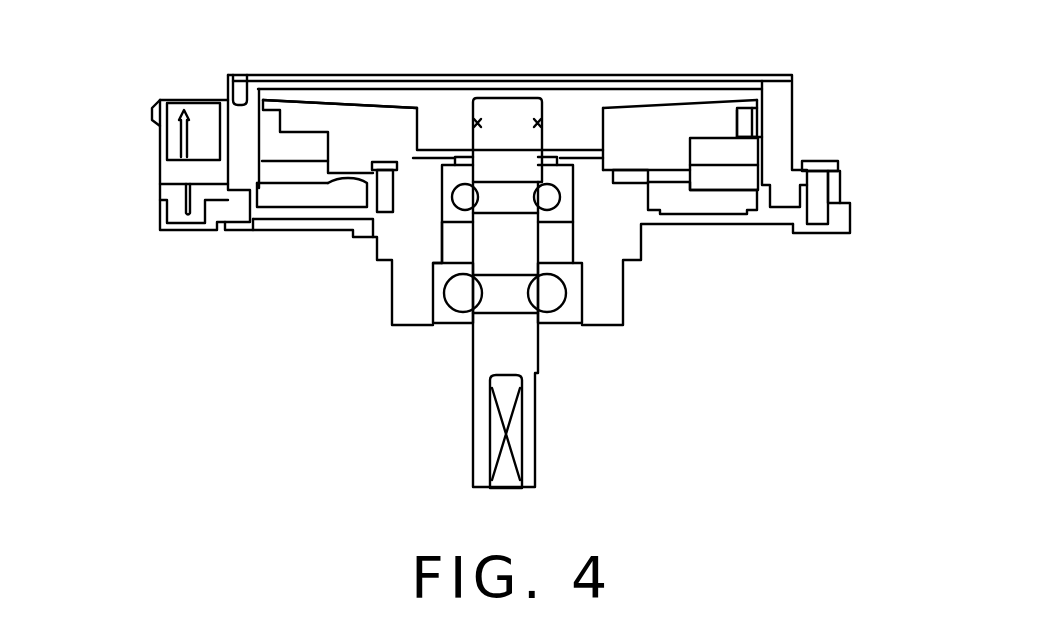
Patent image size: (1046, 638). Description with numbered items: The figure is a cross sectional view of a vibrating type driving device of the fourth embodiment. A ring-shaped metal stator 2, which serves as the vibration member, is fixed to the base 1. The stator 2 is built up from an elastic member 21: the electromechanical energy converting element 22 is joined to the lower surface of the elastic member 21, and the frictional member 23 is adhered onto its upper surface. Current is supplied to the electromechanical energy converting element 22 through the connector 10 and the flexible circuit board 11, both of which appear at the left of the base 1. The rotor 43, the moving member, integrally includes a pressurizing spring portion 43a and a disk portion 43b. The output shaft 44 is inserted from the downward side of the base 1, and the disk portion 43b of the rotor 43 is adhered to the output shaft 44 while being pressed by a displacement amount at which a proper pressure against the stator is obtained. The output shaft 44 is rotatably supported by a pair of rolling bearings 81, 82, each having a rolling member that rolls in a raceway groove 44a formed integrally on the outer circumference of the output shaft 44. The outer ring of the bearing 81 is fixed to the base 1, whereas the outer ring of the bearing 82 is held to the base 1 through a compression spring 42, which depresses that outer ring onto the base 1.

The base 1 is at (840, 220).
The stator 2 is at (916, 88).
The connector 10 is at (170, 172).
The flexible circuit board 11 is at (240, 233).
The elastic member 21 is at (745, 176).
The electromechanical energy converting element 22 is at (771, 191).
The frictional member 23 is at (752, 130).
The compression spring 42 is at (573, 170).
The rotor 43 is at (746, 122).
The pressurizing spring portion 43a is at (313, 96).
The disk portion 43b is at (438, 118).
The output shaft 44 is at (503, 110).
The raceway groove 44a is at (513, 198).
The bearing 81 is at (447, 315).
The bearing 82 is at (447, 207).